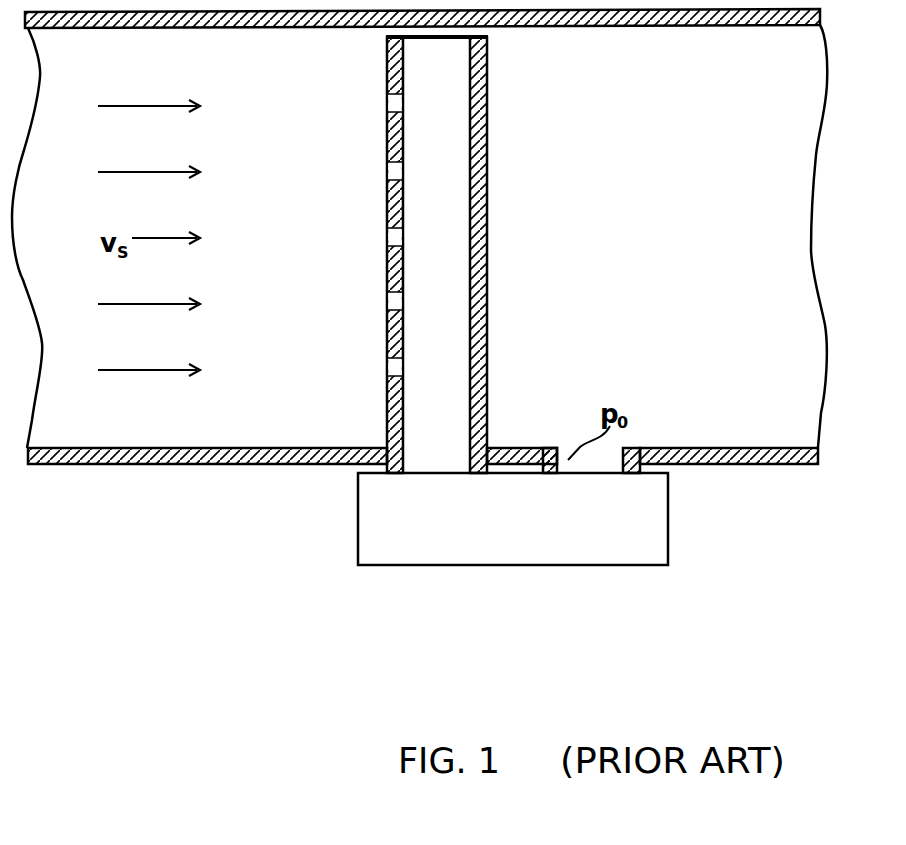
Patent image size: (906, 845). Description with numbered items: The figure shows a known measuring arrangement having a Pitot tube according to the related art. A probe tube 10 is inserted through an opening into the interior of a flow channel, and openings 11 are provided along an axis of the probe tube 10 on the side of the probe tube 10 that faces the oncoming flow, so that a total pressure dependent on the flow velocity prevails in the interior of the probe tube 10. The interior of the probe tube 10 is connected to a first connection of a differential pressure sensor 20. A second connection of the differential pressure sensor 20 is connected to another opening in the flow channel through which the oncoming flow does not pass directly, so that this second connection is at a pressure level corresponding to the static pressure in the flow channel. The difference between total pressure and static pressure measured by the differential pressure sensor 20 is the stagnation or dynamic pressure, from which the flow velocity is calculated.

The probe tube 10 is at (491, 261).
The openings 11 is at (387, 172).
The differential pressure sensor 20 is at (417, 552).